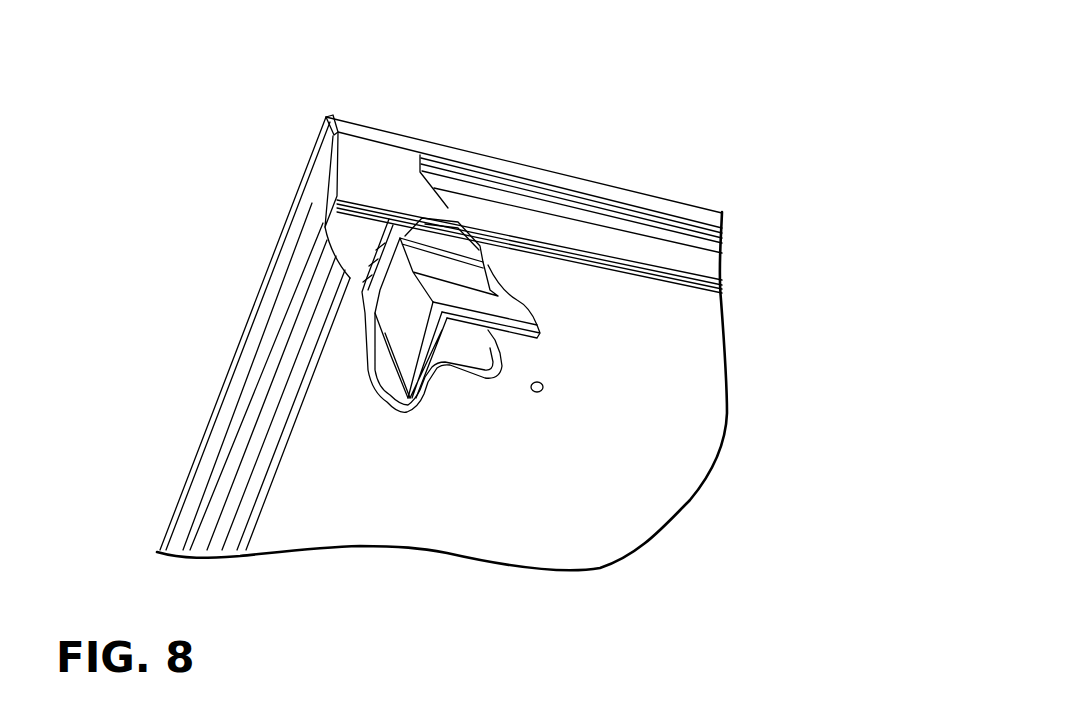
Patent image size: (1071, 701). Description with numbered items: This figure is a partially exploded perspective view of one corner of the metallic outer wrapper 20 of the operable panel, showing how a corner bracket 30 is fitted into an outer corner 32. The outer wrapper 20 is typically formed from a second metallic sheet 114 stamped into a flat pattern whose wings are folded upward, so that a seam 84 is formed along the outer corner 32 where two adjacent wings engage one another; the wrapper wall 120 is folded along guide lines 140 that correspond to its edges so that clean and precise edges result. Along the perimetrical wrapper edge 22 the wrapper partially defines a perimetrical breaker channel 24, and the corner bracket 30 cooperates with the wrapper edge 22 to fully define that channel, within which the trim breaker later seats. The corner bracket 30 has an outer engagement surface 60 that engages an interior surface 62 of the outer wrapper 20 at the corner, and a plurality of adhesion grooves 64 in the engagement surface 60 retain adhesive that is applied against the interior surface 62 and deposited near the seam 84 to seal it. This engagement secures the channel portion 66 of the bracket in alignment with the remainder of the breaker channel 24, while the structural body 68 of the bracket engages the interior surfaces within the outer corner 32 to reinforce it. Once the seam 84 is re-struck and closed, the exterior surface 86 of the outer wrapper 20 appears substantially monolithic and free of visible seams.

The outer wrapper 20 is at (668, 210).
The perimetrical wrapper edge 22 is at (683, 288).
The perimetrical breaker channel 24 is at (697, 269).
The corner bracket 30 is at (388, 345).
The outer corner 32 is at (325, 116).
The outer engagement surface 60 is at (422, 225).
The interior surface 62 is at (380, 182).
The adhesion grooves 64 is at (487, 262).
The channel portion 66 is at (496, 300).
The structural body 68 is at (365, 345).
The seam 84 is at (337, 181).
The exterior surface 86 is at (288, 262).
The second metallic sheet 114 is at (642, 425).
The wrapper wall 120 is at (263, 440).
The guide lines 140 is at (220, 518).